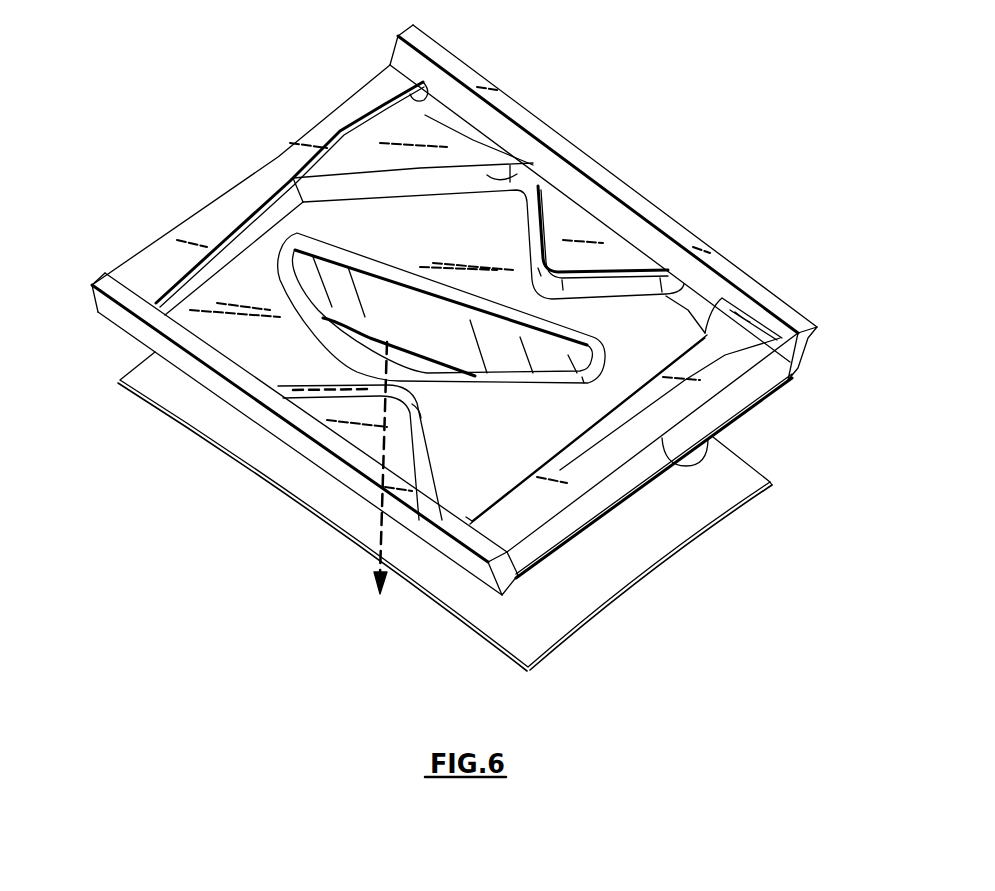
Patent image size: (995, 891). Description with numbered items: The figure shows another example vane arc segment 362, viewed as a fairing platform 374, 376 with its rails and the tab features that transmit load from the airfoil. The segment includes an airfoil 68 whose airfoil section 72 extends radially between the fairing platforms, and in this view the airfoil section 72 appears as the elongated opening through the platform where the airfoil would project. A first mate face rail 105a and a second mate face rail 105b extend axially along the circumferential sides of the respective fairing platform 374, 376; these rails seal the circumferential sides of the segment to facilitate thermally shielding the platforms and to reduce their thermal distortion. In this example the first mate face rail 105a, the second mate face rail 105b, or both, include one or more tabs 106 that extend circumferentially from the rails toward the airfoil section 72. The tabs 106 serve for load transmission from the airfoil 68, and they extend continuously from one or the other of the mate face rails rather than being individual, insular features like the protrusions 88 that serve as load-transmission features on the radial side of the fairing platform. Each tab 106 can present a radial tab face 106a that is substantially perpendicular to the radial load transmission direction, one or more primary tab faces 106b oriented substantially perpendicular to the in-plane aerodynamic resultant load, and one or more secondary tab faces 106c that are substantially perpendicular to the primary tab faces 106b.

The vane arc segment 362 is at (113, 464).
The first mate face rail 105a is at (133, 315).
The second mate face rail 105b is at (600, 163).
The tabs 106 is at (367, 204).
The radial tab face 106a is at (428, 122).
The primary tab faces 106b is at (530, 183).
The secondary tab faces 106c is at (537, 241).
The protrusions 88 is at (447, 214).
The airfoil section 72 is at (337, 325).
The airfoil 68 is at (364, 349).
The fairing platform 376 is at (784, 404).
The fairing platform 374 is at (766, 510).